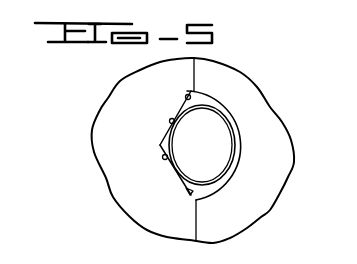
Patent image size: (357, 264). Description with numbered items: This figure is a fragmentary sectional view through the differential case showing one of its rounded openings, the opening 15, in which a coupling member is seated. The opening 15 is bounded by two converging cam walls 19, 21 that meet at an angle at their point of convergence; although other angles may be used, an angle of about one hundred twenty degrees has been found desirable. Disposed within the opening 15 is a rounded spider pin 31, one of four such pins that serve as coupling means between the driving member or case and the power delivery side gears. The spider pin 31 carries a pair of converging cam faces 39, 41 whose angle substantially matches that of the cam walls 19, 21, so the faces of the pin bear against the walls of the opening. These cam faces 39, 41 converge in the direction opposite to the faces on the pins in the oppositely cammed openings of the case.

The opening 15 is at (206, 99).
The cam wall 19 is at (190, 91).
The cam wall 21 is at (188, 190).
The spider pin 31 is at (205, 152).
The cam face 39 is at (170, 119).
The cam face 41 is at (164, 159).